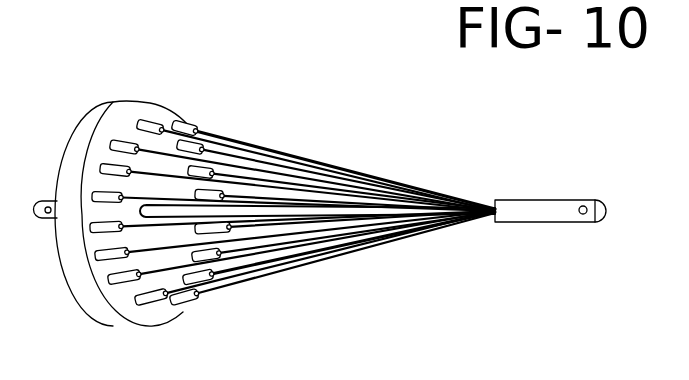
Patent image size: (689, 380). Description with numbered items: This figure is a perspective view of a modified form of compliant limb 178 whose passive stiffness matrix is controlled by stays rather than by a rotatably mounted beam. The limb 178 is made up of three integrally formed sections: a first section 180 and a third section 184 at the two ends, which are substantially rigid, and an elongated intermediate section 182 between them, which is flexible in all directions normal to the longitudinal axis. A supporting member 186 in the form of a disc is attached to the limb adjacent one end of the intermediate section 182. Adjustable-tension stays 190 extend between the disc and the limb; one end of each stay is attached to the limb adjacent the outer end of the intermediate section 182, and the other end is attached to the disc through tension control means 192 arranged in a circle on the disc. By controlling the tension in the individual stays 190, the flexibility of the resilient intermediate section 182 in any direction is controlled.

The limb 178 is at (320, 138).
The first section 180 is at (40, 200).
The intermediate section 182 is at (243, 208).
The third section 184 is at (567, 222).
The supporting member 186 is at (94, 110).
The adjustable-tension stays 190 is at (330, 160).
The tension control means 192 is at (153, 122).